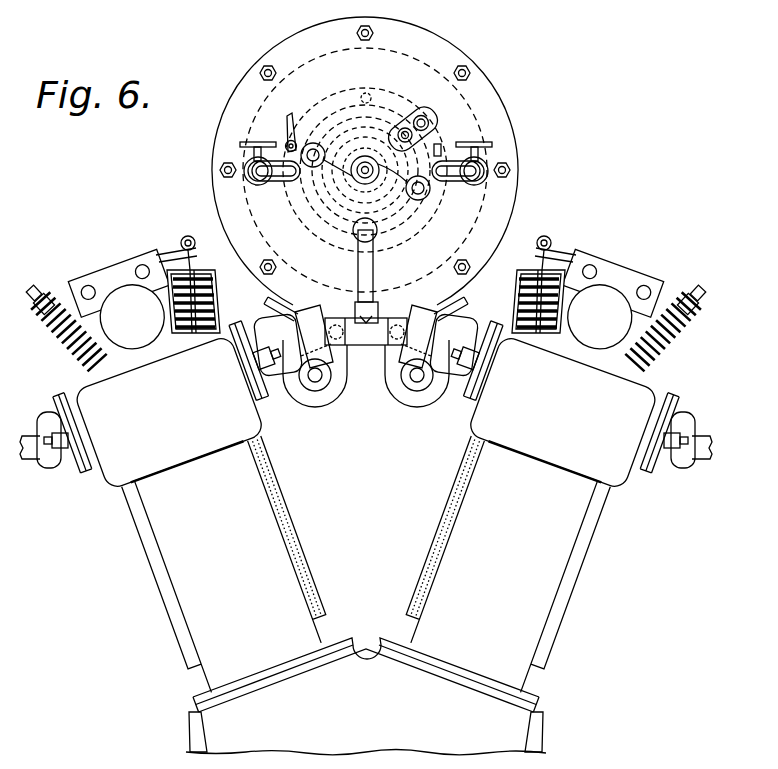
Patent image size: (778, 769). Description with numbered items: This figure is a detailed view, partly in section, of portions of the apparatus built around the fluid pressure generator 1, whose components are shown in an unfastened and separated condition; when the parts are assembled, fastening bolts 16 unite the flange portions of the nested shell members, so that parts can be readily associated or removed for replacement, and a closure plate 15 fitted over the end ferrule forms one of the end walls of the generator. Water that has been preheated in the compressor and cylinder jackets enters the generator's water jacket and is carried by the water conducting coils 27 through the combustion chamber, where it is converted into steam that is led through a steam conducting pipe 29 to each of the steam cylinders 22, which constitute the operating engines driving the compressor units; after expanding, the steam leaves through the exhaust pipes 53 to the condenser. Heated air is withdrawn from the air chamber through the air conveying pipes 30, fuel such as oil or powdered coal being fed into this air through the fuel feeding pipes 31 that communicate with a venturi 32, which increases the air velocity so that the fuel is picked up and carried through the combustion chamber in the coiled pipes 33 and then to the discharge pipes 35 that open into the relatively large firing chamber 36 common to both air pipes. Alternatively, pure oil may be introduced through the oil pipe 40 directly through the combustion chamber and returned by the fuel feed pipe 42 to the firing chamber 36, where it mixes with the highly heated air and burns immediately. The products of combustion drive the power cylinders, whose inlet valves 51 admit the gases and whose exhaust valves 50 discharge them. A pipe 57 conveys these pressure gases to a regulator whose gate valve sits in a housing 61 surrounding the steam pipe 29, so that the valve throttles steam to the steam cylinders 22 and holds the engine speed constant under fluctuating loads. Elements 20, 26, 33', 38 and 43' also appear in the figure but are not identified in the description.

The fluid pressure generator 1 is at (448, 45).
The closure plate 15 is at (240, 100).
The fastening bolts 16 is at (358, 32).
The cylinder 20 is at (299, 543).
The steam engine 22 is at (248, 484).
The stem 26 is at (376, 262).
The water conducting coils 27 is at (366, 92).
The steam conducting pipe 29 is at (312, 388).
The air conveying pipes 30 is at (250, 188).
The fuel feeding pipes 31 is at (270, 133).
The venturi 32 is at (292, 140).
The coiled pipes 33 is at (364, 184).
The lever 33' is at (233, 132).
The discharge pipes 35 is at (365, 159).
The firing chamber 36 is at (358, 181).
The clamp bar 38 is at (241, 145).
The oil pipe 40 is at (427, 119).
The fuel feed pipe 42 is at (403, 127).
The roller housing 43' is at (314, 377).
The exhaust valves 50 is at (50, 295).
The inlet valves 51 is at (184, 238).
The exhaust pipes 53 is at (26, 462).
The pipe 57 is at (412, 397).
The housing 61 is at (312, 325).